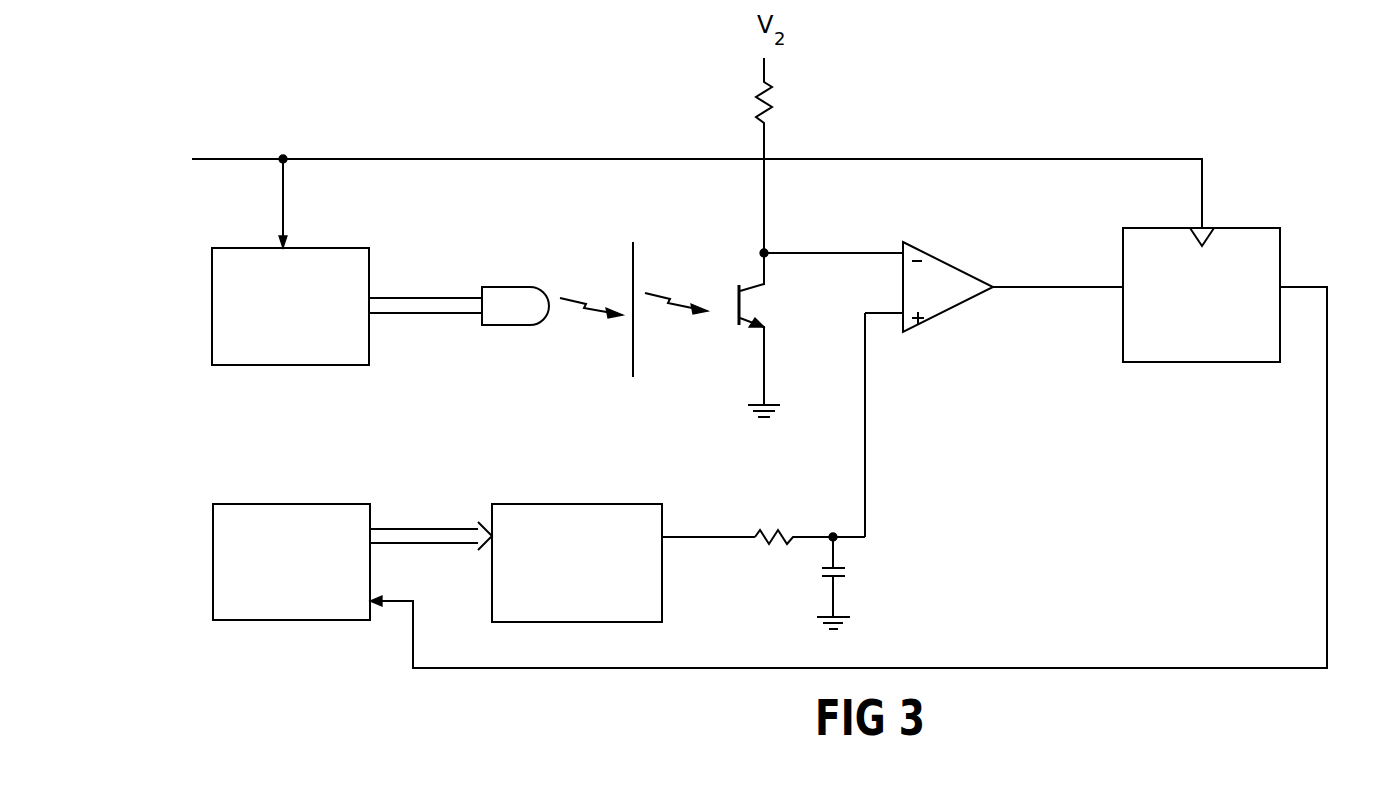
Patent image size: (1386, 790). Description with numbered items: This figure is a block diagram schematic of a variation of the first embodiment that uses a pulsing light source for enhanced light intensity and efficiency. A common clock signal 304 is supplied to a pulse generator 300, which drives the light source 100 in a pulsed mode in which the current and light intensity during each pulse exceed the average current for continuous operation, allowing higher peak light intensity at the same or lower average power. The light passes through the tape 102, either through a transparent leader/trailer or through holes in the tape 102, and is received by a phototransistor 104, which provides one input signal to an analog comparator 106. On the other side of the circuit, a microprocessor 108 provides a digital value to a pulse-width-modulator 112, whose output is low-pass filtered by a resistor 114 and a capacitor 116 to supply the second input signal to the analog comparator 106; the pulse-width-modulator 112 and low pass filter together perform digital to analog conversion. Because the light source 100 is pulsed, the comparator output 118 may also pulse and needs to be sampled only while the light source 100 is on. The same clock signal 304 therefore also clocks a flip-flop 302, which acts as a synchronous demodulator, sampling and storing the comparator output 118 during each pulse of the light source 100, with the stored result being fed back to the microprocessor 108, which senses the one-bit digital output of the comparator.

The clock signal 304 is at (238, 159).
The pulse generator 300 is at (303, 355).
The light source 100 is at (500, 287).
The tape 102 is at (633, 268).
The phototransistor 104 is at (752, 291).
The analog comparator 106 is at (960, 299).
The comparator output 118 is at (1027, 287).
The flip-flop 302 is at (1224, 352).
The microprocessor 108 is at (301, 609).
The pulse-width-modulator 112 is at (583, 609).
The resistor 114 is at (757, 537).
The capacitor 116 is at (850, 571).